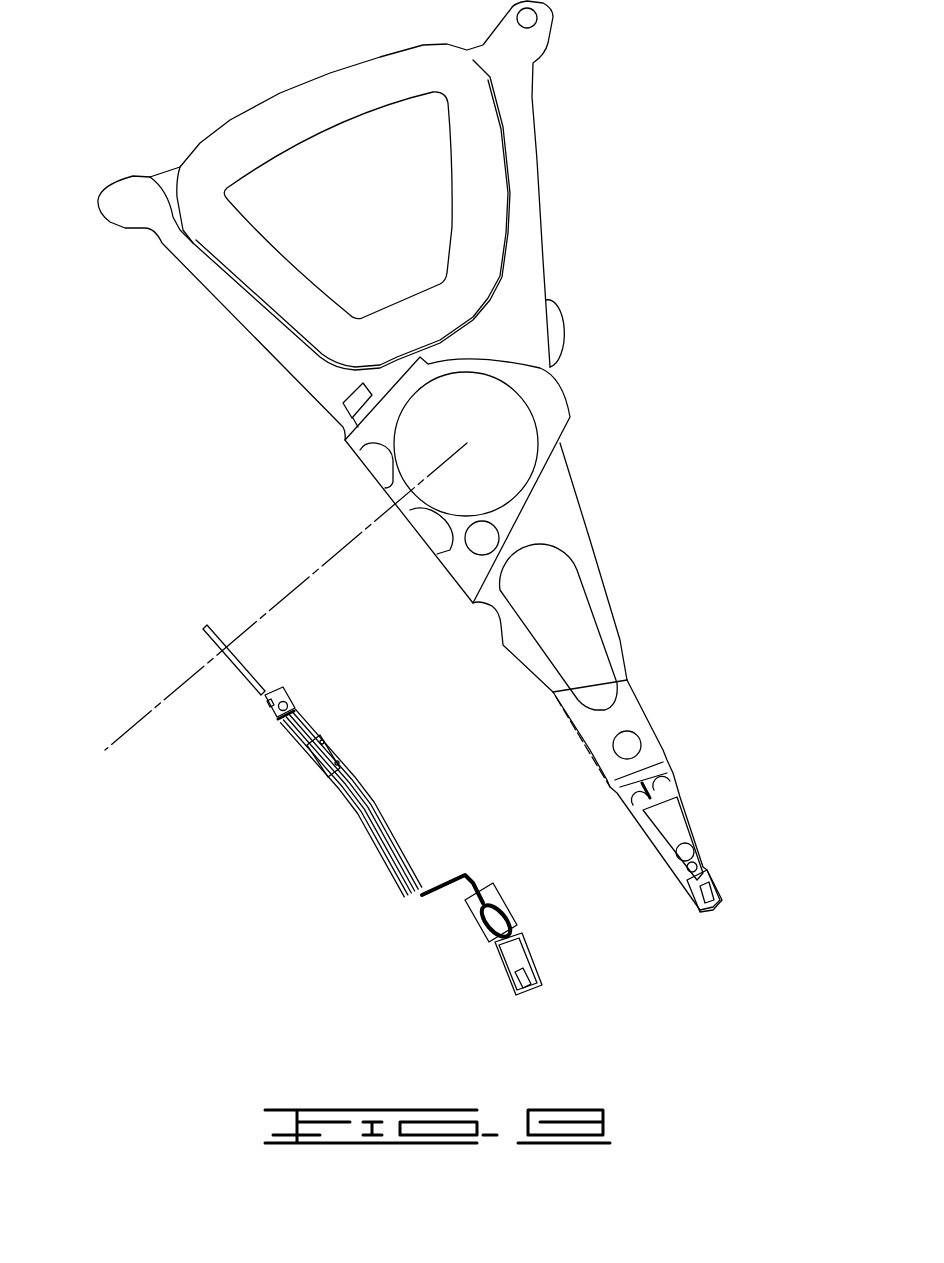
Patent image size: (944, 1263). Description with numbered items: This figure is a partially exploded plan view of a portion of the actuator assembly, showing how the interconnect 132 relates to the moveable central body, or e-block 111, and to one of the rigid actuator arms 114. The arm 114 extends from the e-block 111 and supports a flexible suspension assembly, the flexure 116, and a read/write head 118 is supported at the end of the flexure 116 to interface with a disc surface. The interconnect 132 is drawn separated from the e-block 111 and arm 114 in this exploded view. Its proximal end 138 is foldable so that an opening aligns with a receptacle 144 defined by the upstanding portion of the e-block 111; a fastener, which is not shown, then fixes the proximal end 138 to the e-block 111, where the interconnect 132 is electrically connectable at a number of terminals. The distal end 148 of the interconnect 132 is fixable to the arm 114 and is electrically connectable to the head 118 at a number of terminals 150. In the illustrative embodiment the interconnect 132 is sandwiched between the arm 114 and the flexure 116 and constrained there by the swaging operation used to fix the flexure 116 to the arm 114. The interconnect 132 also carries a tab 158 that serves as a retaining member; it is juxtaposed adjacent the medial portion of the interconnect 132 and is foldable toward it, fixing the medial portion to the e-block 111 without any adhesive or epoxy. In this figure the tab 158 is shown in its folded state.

The e-block 111 is at (570, 407).
The actuator arm 114 is at (623, 655).
The flexure 116 is at (685, 807).
The read/write head 118 is at (722, 883).
The interconnect 132 is at (347, 835).
The proximal end 138 is at (173, 622).
The receptacle 144 is at (390, 497).
The distal end 148 is at (523, 922).
The terminals 150 is at (528, 990).
The tab 158 is at (327, 752).